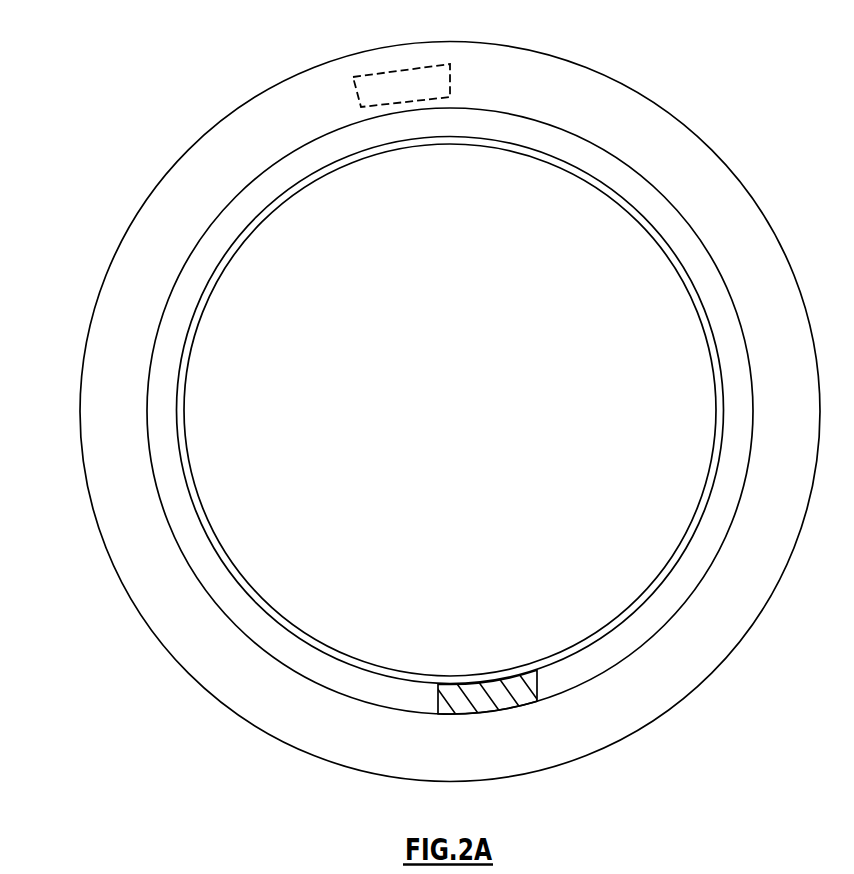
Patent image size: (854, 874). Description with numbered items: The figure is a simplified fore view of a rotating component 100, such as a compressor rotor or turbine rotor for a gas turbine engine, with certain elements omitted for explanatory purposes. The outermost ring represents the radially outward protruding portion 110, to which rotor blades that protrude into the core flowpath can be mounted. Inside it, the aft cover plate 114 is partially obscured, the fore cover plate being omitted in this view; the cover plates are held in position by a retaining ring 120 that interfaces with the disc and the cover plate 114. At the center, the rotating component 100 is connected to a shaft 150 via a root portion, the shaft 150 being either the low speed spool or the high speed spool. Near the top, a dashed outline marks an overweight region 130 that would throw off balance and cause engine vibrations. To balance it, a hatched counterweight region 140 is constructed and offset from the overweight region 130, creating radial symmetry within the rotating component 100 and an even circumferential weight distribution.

The rotating component 100 is at (122, 178).
The radially outward protruding portion 110 is at (243, 140).
The cover plate 114 is at (582, 152).
The retaining ring 120 is at (316, 182).
The overweight region 130 is at (413, 82).
The counterweight region 140 is at (498, 692).
The shaft 150 is at (471, 422).